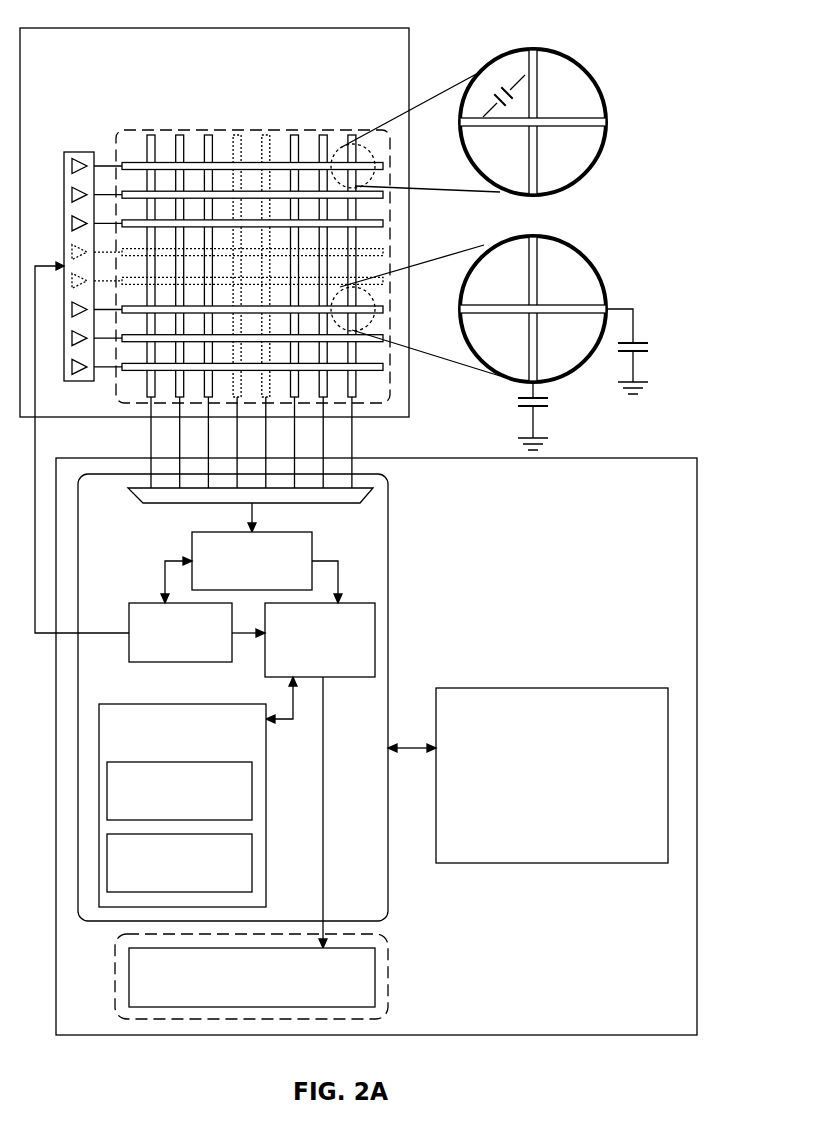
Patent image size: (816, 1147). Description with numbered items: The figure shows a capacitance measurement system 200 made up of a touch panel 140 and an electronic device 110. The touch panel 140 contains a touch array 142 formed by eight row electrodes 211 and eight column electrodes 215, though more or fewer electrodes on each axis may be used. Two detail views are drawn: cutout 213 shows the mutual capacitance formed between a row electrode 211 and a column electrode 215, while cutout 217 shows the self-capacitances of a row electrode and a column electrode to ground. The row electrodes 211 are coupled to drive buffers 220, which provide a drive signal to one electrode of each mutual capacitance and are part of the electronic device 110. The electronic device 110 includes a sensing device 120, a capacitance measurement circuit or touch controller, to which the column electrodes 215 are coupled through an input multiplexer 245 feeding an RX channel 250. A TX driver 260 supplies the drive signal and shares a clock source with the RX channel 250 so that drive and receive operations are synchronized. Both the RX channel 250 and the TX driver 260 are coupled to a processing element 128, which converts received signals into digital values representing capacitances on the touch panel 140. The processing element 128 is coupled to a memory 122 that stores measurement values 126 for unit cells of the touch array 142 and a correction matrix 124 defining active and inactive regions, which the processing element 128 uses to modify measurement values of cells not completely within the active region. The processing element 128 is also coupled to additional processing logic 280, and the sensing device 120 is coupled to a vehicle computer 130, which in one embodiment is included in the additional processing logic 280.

The capacitance measurement system 200 is at (687, 108).
The touch panel 140 is at (301, 222).
The touch array 142 is at (314, 94).
The column electrodes 215 is at (180, 134).
The row electrodes 211 is at (383, 250).
The drive buffers 220 is at (80, 151).
The cutout 213 is at (582, 60).
The cutout 217 is at (582, 247).
The electronic device 110 is at (366, 648).
The input multiplexer 245 is at (373, 495).
The sensing device 120 is at (388, 640).
The RX channel 250 is at (268, 582).
The TX driver 260 is at (196, 654).
The processing element 128 is at (337, 672).
The memory 122 is at (199, 754).
The correction matrix 124 is at (223, 812).
The measurement values 126 is at (227, 883).
The vehicle computer 130 is at (552, 775).
The additional processing logic 280 is at (388, 986).